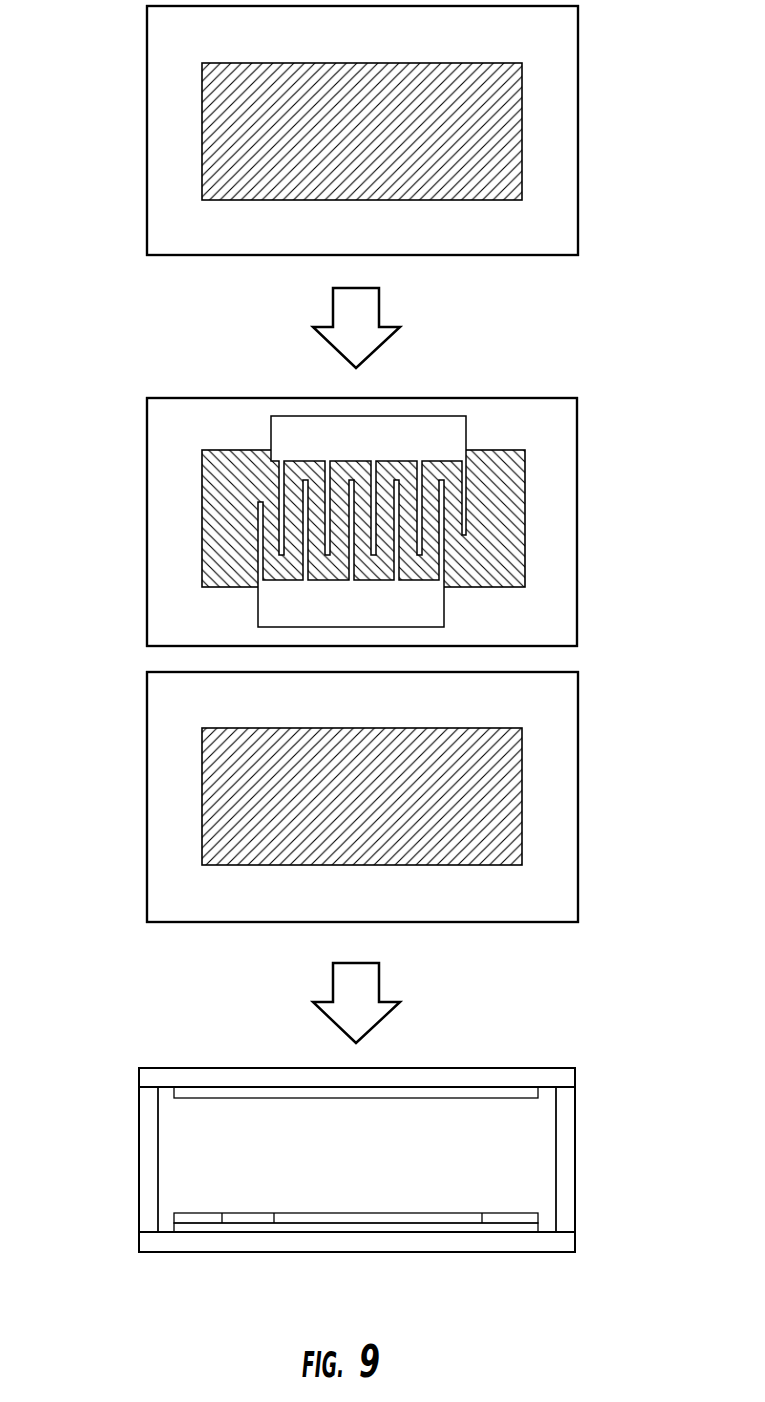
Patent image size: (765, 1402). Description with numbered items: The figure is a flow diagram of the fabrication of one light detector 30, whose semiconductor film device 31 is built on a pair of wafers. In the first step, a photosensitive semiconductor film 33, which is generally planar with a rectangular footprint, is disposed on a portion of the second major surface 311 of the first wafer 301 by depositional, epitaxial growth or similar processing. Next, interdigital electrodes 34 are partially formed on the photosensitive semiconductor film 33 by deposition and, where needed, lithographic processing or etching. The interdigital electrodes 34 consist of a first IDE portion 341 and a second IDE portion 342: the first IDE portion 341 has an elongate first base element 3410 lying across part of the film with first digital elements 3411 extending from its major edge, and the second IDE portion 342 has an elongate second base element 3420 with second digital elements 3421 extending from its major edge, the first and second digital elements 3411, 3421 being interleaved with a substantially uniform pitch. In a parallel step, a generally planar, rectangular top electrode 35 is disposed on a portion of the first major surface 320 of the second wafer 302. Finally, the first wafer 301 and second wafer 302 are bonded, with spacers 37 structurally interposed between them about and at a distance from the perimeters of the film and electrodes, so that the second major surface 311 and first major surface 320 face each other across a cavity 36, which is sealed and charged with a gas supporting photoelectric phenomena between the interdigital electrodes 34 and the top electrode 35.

The light detector 30 is at (139, 1068).
The first wafer 301 is at (146, 47).
The second wafer 302 is at (147, 714).
The semiconductor film device 31 is at (147, 404).
The second major surface 311 is at (553, 103).
The first major surface 320 is at (553, 770).
The photosensitive semiconductor film 33 is at (255, 143).
The interdigital electrodes 34 is at (260, 513).
The first IDE portion 341 is at (468, 433).
The first base element 3410 is at (432, 427).
The first digital elements 3411 is at (465, 525).
The second IDE portion 342 is at (273, 595).
The second base element 3420 is at (433, 600).
The second digital elements 3421 is at (305, 538).
The top electrode 35 is at (255, 808).
The cavity 36 is at (365, 1178).
The spacers 37 is at (146, 1156).